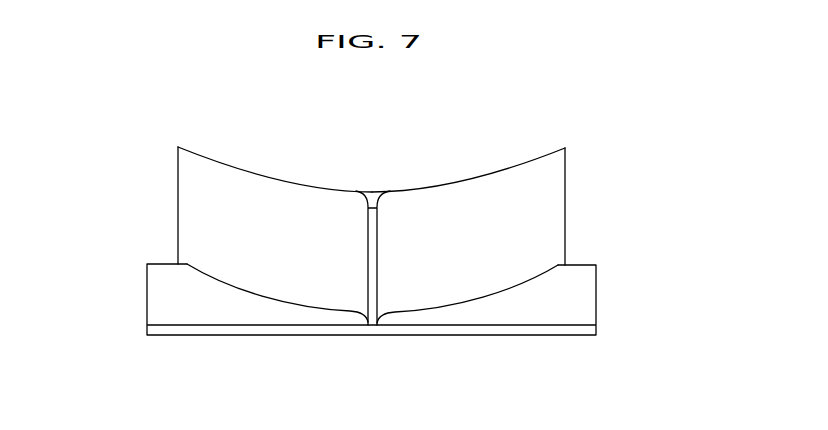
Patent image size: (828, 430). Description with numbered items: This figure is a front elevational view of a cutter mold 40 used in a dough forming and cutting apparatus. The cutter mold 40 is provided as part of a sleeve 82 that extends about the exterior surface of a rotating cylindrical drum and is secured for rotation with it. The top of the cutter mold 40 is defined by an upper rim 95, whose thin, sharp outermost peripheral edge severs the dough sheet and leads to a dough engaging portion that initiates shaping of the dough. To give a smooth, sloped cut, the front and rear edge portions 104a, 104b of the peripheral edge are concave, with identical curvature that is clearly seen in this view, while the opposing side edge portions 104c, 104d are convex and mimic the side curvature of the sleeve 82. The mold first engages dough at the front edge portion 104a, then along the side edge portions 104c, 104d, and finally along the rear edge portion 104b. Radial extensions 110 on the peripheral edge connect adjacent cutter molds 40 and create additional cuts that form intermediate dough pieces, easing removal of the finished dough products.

The cutter mold 40 is at (493, 133).
The sleeve 82 is at (578, 312).
The upper rim 95 is at (228, 162).
The front edge portion 104a is at (420, 188).
The rear edge portion 104b is at (326, 189).
The side edge portion 104c is at (180, 146).
The side edge portion 104d is at (565, 148).
The radial extensions 110 is at (380, 268).